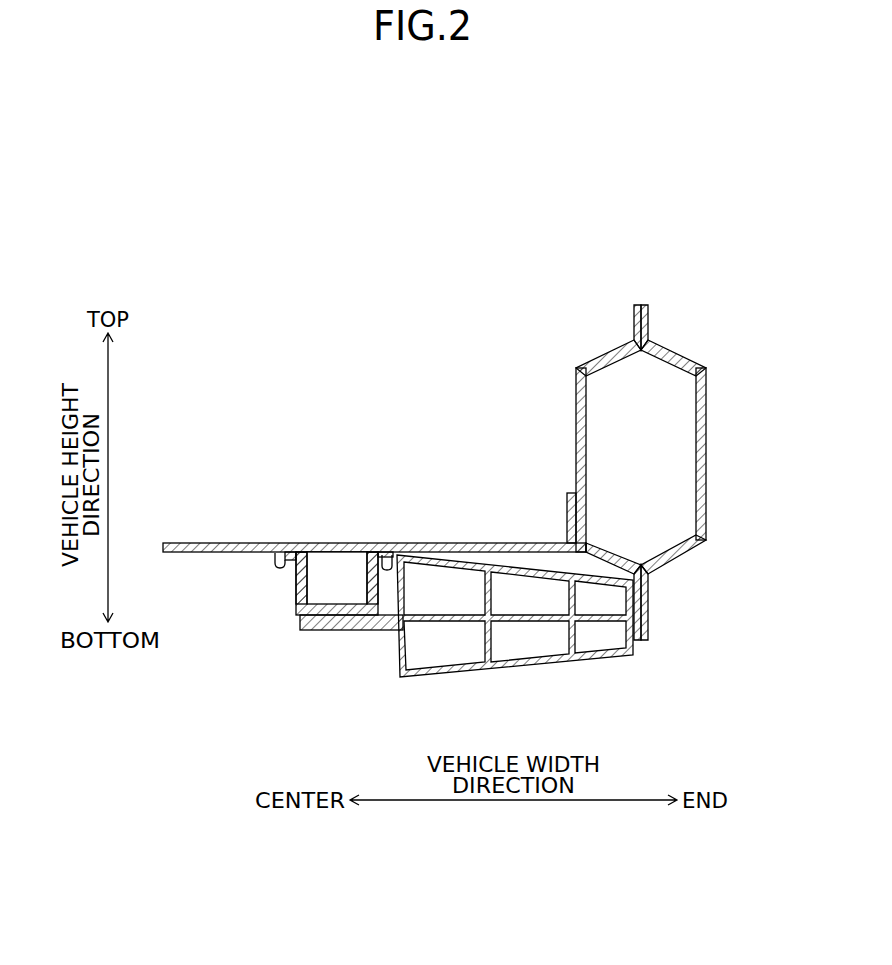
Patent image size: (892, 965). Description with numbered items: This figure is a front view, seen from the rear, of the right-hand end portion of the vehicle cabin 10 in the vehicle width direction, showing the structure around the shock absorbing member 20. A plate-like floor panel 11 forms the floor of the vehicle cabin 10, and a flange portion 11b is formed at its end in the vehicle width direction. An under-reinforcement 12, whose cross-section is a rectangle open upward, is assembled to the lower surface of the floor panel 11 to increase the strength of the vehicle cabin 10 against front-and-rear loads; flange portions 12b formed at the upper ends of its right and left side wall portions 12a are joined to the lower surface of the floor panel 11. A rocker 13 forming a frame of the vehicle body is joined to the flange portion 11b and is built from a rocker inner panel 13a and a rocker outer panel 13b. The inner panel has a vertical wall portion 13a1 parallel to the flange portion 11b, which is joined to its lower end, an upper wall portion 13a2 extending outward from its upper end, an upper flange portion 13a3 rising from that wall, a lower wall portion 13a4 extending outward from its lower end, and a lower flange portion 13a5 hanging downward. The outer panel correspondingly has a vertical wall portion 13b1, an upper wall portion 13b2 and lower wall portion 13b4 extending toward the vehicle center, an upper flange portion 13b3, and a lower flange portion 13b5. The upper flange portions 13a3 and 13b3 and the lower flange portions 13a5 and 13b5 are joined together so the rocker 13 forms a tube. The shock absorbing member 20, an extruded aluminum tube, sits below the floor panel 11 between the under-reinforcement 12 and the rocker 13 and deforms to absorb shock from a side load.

The vehicle cabin 10 is at (569, 173).
The floor panel 11 is at (337, 543).
The flange portion 11b is at (567, 500).
The under-reinforcement 12 is at (318, 587).
The side wall portions 12a is at (296, 580).
The flange portions 12b is at (274, 552).
The rocker 13 is at (688, 256).
The rocker inner panel 13a is at (638, 304).
The vertical wall portion 13a1 is at (575, 398).
The upper wall portion 13a2 is at (590, 361).
The upper flange portion 13a3 is at (634, 320).
The lower wall portion 13a4 is at (570, 546).
The lower flange portion 13a5 is at (628, 577).
The rocker outer panel 13b is at (646, 304).
The vertical wall portion 13b1 is at (707, 426).
The upper wall portion 13b2 is at (698, 358).
The upper flange portion 13b3 is at (648, 320).
The lower wall portion 13b4 is at (680, 558).
The lower flange portion 13b5 is at (648, 626).
The shock absorbing member 20 is at (524, 679).